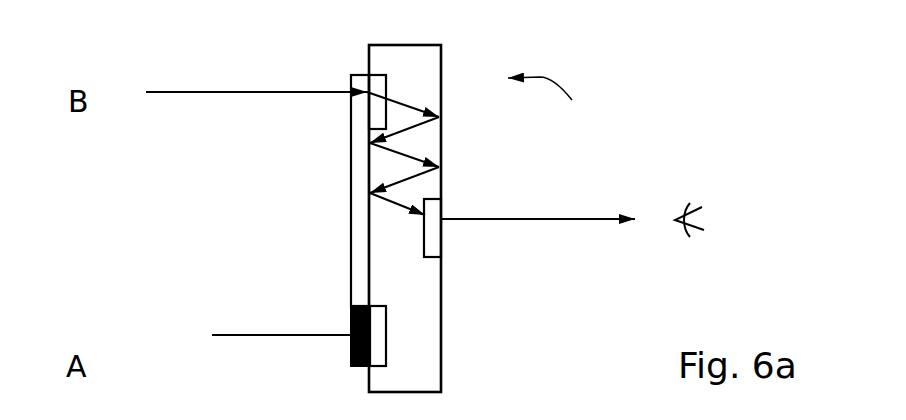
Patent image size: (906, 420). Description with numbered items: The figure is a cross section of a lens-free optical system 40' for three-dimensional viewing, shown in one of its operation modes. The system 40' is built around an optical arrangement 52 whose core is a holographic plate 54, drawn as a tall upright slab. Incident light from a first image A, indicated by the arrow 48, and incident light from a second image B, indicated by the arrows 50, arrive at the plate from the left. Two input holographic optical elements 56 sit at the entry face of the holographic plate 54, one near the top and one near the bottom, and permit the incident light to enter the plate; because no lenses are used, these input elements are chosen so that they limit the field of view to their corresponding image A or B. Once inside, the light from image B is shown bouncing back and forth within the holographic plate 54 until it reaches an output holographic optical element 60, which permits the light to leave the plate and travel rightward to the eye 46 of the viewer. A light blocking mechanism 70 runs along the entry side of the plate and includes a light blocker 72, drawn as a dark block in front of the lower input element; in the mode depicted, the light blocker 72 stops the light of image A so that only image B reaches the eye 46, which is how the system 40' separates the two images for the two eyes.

The optical system 40' is at (552, 103).
The eye 46 is at (700, 231).
The arrows indicating incident light from first image A 48 is at (242, 335).
The arrows indicating incident light from second image B 50 is at (296, 92).
The optical arrangement 52 is at (470, 220).
The holographic plate 54 is at (425, 340).
The input holographic optical element 56 is at (378, 80).
The output holographic optical element 60 is at (438, 238).
The light blocking mechanism 70 is at (362, 213).
The light blocker 72 is at (351, 350).